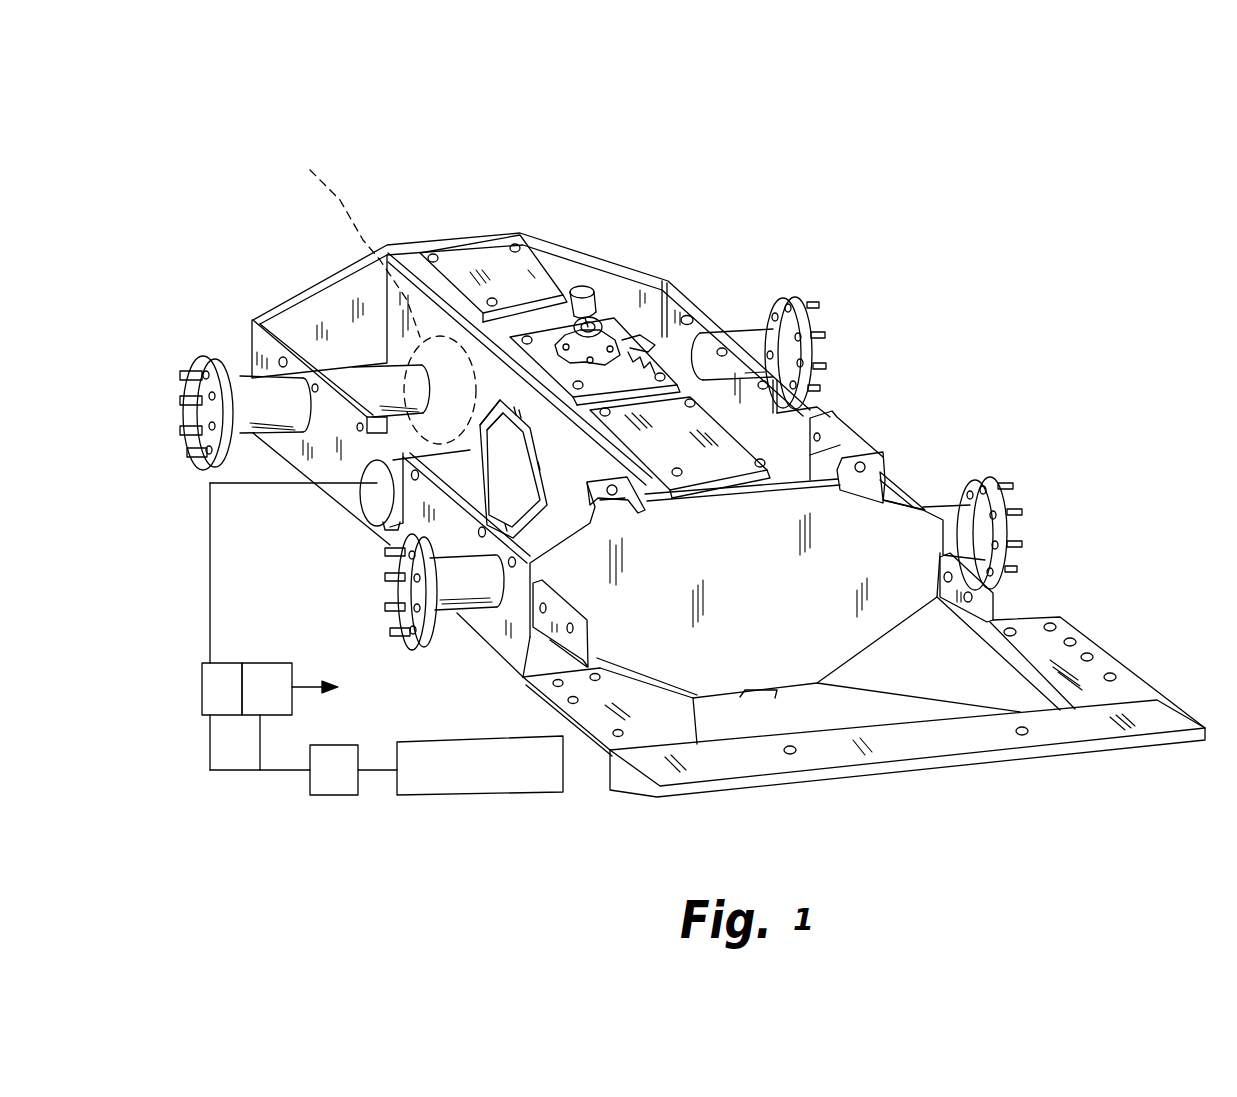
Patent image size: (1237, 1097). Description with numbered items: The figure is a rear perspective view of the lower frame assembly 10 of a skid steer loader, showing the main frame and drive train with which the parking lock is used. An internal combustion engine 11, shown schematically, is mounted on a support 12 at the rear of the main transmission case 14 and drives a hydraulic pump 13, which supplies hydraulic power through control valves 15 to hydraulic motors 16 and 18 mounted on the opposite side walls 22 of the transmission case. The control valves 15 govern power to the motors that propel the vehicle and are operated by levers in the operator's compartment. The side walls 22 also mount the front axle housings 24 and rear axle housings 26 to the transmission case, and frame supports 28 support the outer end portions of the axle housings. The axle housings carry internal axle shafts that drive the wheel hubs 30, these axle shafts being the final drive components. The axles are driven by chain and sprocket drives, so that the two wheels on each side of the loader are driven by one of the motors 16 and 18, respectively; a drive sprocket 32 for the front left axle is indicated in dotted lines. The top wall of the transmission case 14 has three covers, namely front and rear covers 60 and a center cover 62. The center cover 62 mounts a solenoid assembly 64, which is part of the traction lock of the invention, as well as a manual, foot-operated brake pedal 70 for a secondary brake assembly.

The lower frame assembly 10 is at (922, 296).
The internal combustion engine 11 is at (462, 797).
The support 12 is at (1055, 650).
The hydraulic pump 13 is at (340, 796).
The main transmission case 14 is at (505, 222).
The control valves 15 is at (222, 663).
The hydraulic motor 16 is at (410, 253).
The hydraulic motor 18 is at (830, 413).
The side walls 22 is at (352, 368).
The front axle housings 24 is at (356, 375).
The rear axle housings 26 is at (457, 613).
The frame supports 28 is at (297, 457).
The wheel hubs 30 is at (197, 357).
The drive sprocket 32 is at (360, 294).
The front and rear covers 60 is at (453, 255).
The center cover 62 is at (648, 373).
The solenoid assembly 64 is at (610, 318).
The brake pedal 70 is at (606, 305).